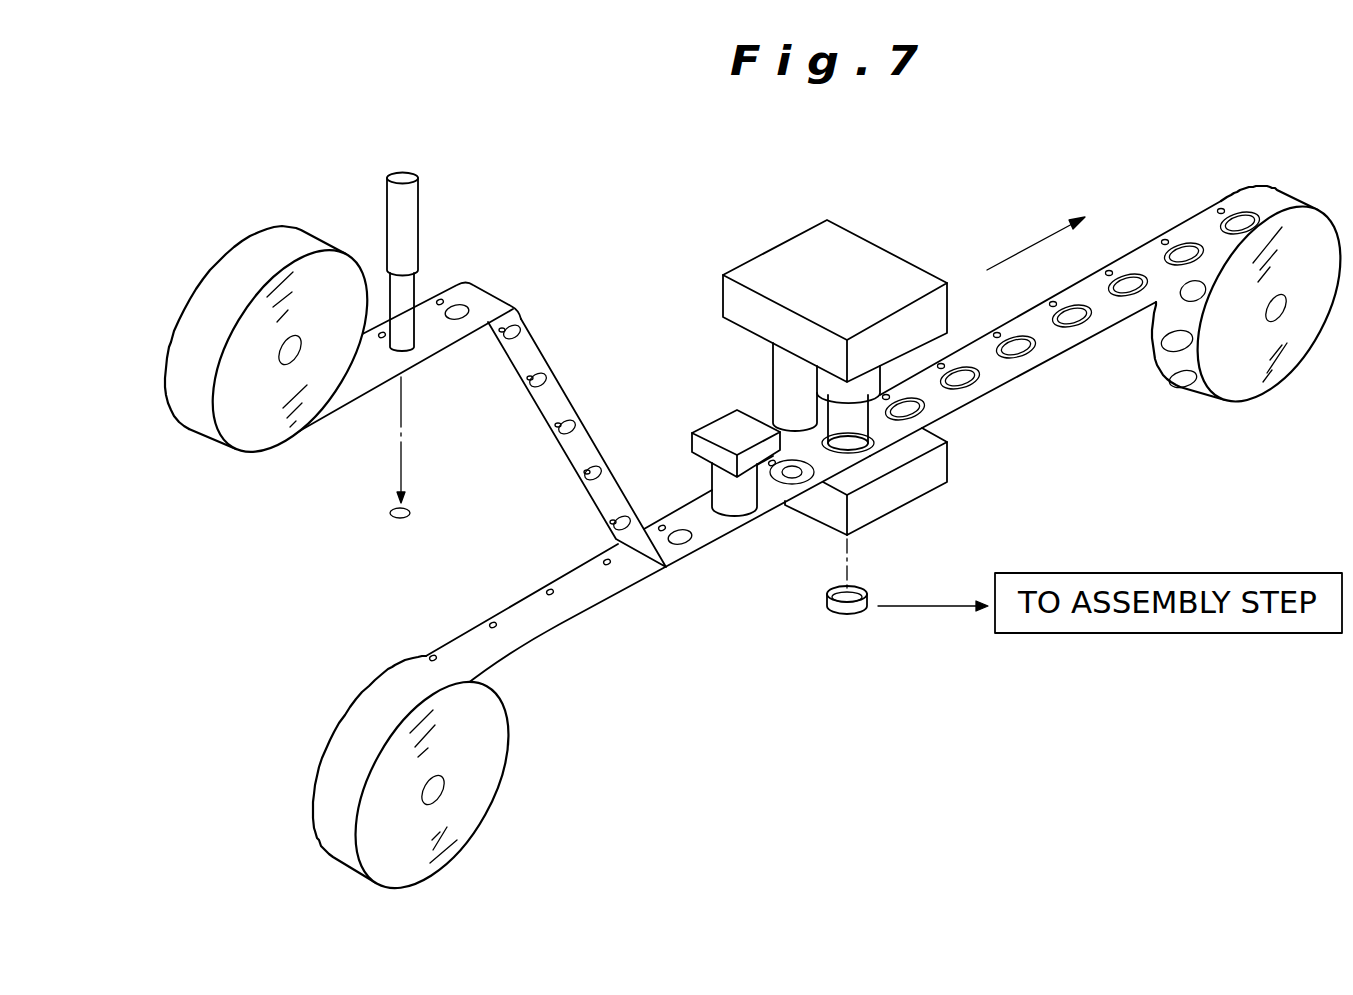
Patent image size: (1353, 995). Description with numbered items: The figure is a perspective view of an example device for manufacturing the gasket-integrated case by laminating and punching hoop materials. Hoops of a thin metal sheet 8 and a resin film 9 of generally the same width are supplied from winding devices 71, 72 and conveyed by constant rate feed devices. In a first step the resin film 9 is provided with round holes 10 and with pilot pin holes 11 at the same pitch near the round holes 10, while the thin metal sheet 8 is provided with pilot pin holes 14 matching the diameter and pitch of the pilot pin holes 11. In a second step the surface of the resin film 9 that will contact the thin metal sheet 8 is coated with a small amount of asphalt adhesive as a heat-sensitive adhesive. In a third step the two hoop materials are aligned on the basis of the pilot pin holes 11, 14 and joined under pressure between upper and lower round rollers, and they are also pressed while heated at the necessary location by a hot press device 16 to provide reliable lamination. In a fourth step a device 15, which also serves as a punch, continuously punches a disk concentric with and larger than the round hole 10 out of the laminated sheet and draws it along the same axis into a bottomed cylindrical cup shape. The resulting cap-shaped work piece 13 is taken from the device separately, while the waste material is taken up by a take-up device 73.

The thin metal sheet 8 is at (608, 592).
The resin film 9 is at (562, 402).
The round holes 10 is at (540, 378).
The pilot pin holes 11 is at (441, 300).
The cap-shaped work piece 13 is at (835, 614).
The pilot pin holes 14 is at (550, 590).
The punch and drawing device 15 is at (866, 268).
The hot press device 16 is at (727, 442).
The winding device 71 is at (293, 357).
The winding device 72 is at (440, 793).
The take-up device 73 is at (1280, 312).